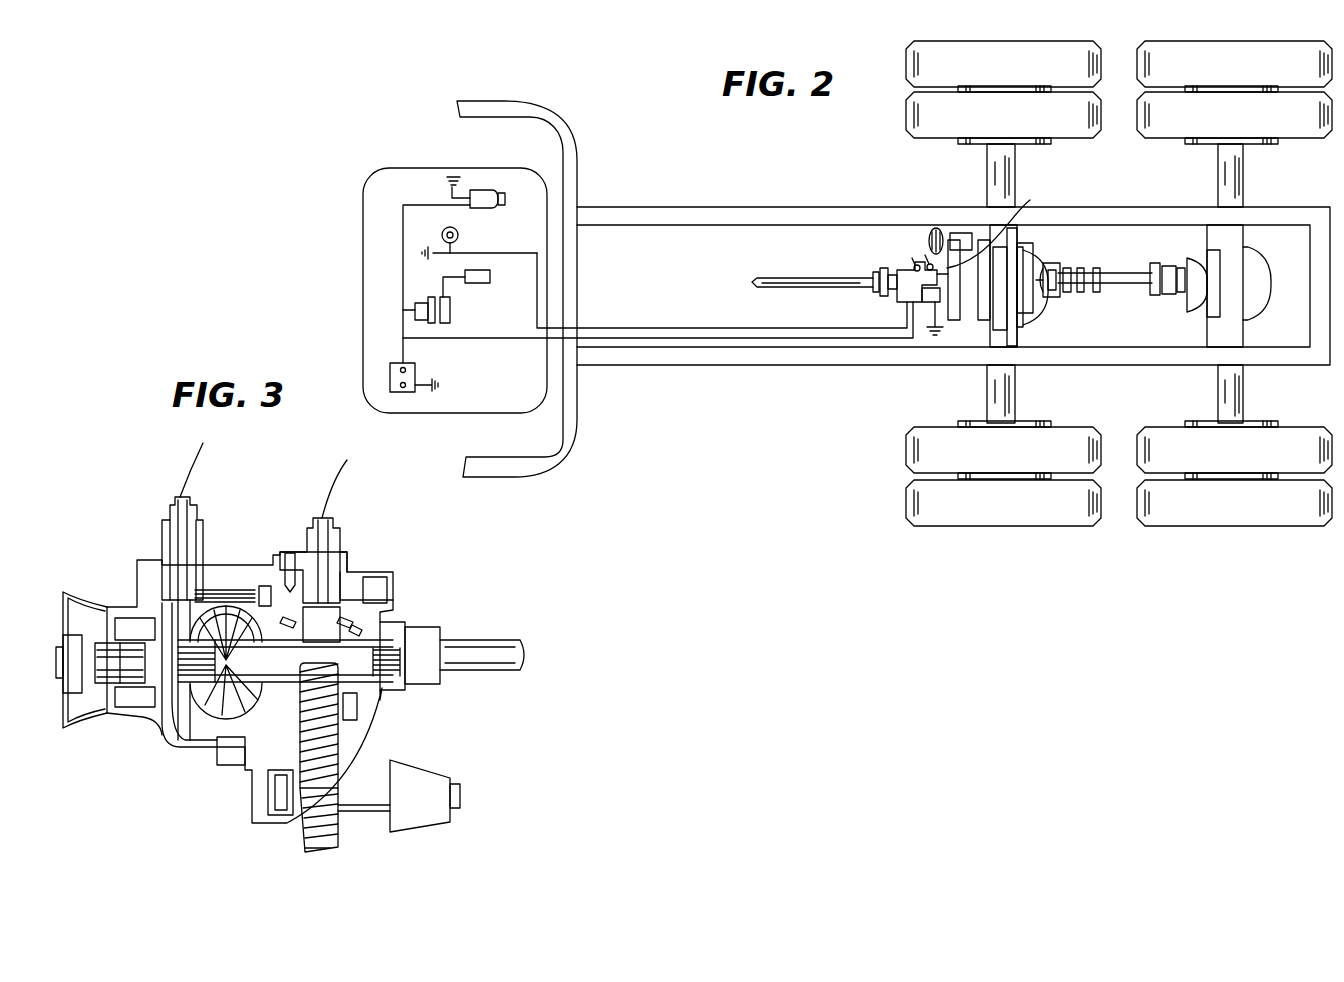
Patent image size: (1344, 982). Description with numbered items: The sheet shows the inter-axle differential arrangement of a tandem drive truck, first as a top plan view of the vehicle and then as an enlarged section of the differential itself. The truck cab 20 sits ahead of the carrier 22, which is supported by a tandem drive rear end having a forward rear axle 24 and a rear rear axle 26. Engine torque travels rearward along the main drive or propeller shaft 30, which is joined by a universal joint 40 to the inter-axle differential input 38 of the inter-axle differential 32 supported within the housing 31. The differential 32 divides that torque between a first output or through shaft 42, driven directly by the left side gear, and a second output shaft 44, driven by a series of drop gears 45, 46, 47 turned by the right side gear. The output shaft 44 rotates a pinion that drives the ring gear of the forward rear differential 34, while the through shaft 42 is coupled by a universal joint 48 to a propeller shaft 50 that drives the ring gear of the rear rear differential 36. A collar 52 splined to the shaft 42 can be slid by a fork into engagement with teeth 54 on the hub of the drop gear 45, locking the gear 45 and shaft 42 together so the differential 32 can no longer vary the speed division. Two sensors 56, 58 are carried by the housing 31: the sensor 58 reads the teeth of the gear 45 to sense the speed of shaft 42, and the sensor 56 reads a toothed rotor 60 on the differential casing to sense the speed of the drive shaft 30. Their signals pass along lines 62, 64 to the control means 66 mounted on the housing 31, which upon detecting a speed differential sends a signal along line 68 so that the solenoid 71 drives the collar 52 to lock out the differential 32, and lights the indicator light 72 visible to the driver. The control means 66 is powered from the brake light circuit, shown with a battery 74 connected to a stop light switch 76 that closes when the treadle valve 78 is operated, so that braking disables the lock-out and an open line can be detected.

In FIG. 2, the truck cab 20 is at (563, 124).
In FIG. 2, the carrier 22 is at (674, 212).
In FIG. 2, the forward rear axle 24 is at (1016, 172).
In FIG. 2, the rear rear axle 26 is at (1243, 172).
In FIG. 2, the main drive or propeller shaft 30 is at (795, 280).
In FIG. 2, the housing 31 is at (975, 296).
In FIG. 3, the housing 31 is at (157, 733).
In FIG. 3, the inter-axle differential 32 is at (225, 697).
In FIG. 2, the forward rear differential 34 is at (1040, 260).
In FIG. 2, the rear rear differential 36 is at (1255, 262).
In FIG. 2, the inter-axle differential input 38 is at (884, 290).
In FIG. 3, the inter-axle differential input 38 is at (107, 643).
In FIG. 2, the universal joint 40 is at (873, 284).
In FIG. 2, the first output or through shaft 42 is at (1043, 280).
In FIG. 3, the first output or through shaft 42 is at (273, 673).
In FIG. 3, the second output shaft 44 is at (369, 797).
In FIG. 3, the drop gear 45 is at (335, 637).
In FIG. 3, the drop gear 46 is at (305, 740).
In FIG. 3, the drop gear 47 is at (320, 841).
In FIG. 2, the universal joint 48 is at (1062, 266).
In FIG. 2, the propeller shaft 50 is at (1125, 283).
In FIG. 3, the collar 52 is at (427, 632).
In FIG. 3, the teeth 54 is at (387, 622).
In FIG. 2, the sensor 56 is at (913, 266).
In FIG. 3, the sensor 56 is at (180, 560).
In FIG. 2, the sensor 58 is at (928, 264).
In FIG. 3, the sensor 58 is at (322, 567).
In FIG. 3, the toothed rotor 60 is at (170, 592).
In FIG. 2, the signal line 62 is at (912, 297).
In FIG. 3, the signal line 62 is at (188, 465).
In FIG. 2, the signal line 64 is at (1030, 208).
In FIG. 3, the signal line 64 is at (342, 478).
In FIG. 2, the control means or controller 66 is at (929, 302).
In FIG. 2, the output signal line 68 is at (1026, 298).
In FIG. 2, the solenoid 71 is at (966, 232).
In FIG. 2, the indicator light 72 is at (459, 236).
In FIG. 2, the battery 74 is at (414, 372).
In FIG. 2, the stop light switch 76 is at (450, 315).
In FIG. 2, the treadle valve 78 is at (480, 283).